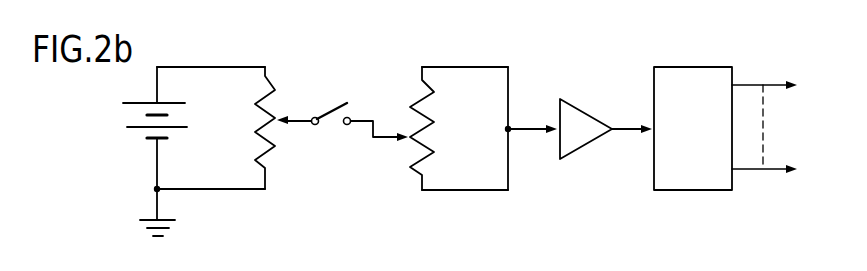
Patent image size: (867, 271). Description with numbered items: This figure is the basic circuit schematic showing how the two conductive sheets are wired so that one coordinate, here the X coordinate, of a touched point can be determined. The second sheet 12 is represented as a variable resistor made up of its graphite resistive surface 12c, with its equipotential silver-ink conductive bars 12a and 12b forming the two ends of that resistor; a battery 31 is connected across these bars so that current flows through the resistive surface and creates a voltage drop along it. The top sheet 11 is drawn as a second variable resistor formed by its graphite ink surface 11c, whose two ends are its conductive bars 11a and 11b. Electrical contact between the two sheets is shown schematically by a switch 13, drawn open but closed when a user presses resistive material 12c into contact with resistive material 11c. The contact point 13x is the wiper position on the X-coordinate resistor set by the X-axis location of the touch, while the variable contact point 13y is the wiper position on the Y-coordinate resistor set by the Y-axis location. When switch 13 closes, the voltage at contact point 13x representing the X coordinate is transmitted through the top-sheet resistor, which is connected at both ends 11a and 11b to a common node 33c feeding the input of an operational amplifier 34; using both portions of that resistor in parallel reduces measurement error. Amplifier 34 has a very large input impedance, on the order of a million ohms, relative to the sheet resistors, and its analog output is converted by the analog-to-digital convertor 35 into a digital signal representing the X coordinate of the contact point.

The second sheet 12 is at (183, 57).
The conductive bar 12a is at (227, 67).
The conductive bar 12b is at (207, 190).
The resistive surface 12c is at (257, 111).
The battery 31 is at (137, 104).
The switch 13 is at (340, 98).
The contact point 13x is at (299, 124).
The variable contact point 13y is at (387, 139).
The top sheet 11 is at (503, 57).
The conductive bar 11a is at (467, 67).
The conductive bar 11b is at (463, 192).
The graphite ink surface 11c is at (428, 123).
The output node 33c is at (507, 129).
The operational amplifier 34 is at (582, 148).
The analog-to-digital convertor 35 is at (703, 178).